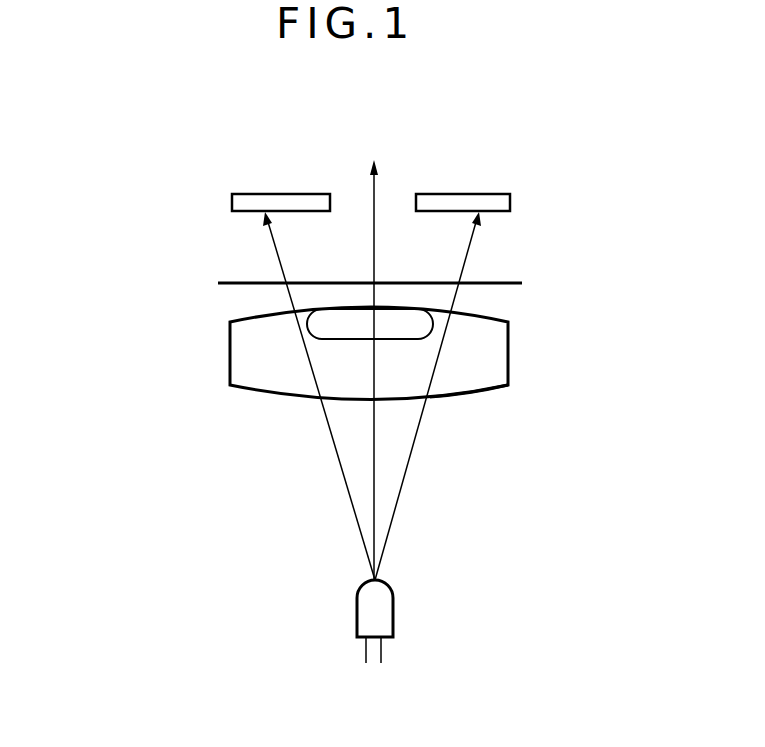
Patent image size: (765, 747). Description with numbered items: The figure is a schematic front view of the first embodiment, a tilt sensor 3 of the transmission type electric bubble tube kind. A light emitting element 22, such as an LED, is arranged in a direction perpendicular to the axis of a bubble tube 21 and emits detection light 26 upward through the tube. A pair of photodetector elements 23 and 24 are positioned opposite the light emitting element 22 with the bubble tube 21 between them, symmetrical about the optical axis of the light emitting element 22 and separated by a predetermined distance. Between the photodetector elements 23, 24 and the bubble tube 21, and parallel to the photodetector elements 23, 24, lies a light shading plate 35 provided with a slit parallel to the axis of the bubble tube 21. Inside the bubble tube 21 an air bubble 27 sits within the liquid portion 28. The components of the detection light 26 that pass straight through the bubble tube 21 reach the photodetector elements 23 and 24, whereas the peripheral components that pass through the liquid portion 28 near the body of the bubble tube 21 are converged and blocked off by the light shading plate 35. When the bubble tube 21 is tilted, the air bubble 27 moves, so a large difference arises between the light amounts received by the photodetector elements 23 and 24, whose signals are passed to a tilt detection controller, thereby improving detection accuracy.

The tilt sensor 3 is at (179, 240).
The bubble tube 21 is at (493, 393).
The light emitting element 22 is at (387, 607).
The photodetector element 23 is at (271, 194).
The photodetector element 24 is at (465, 194).
The detection light 26 is at (393, 523).
The air bubble 27 is at (343, 330).
The liquid portion 28 is at (463, 383).
The light shading plate 35 is at (510, 288).